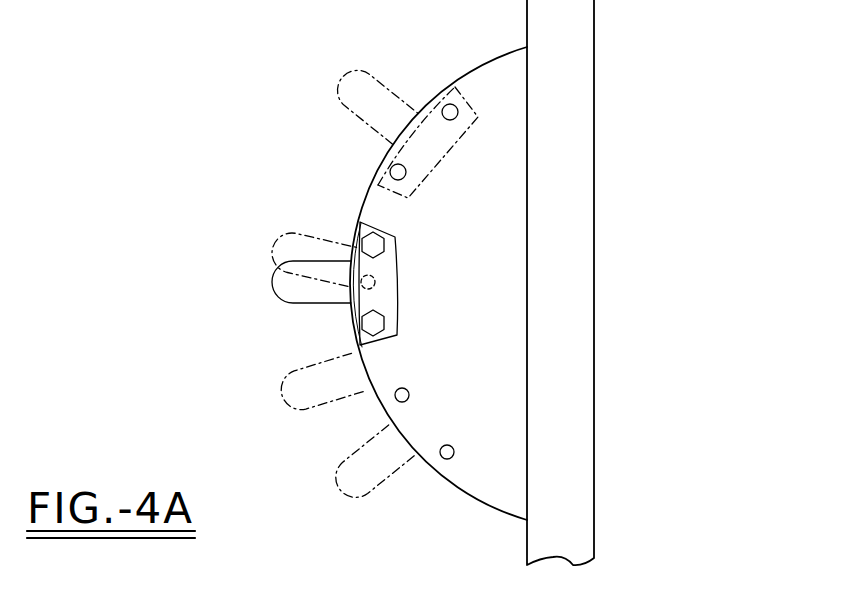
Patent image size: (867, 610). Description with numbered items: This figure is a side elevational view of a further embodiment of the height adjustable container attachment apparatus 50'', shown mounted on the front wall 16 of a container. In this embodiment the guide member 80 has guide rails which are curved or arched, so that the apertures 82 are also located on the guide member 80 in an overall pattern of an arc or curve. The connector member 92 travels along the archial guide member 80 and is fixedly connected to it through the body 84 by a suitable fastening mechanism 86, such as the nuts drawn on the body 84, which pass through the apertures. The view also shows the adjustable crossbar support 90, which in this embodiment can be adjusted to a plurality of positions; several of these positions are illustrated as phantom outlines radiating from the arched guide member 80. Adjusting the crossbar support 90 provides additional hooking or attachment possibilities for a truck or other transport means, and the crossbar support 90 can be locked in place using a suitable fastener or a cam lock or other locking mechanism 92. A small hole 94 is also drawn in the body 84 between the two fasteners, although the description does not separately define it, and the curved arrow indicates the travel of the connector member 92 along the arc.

The height adjustable container attachment apparatus 50'' is at (172, 96).
The front wall 16 is at (583, 138).
The guide member 80 is at (507, 327).
The apertures 82 is at (452, 120).
The body 84 is at (388, 272).
The fastening mechanism 86 is at (382, 243).
The adjustable crossbar support 90 is at (350, 67).
The connector member 92 is at (338, 312).
The hole 94 is at (375, 284).